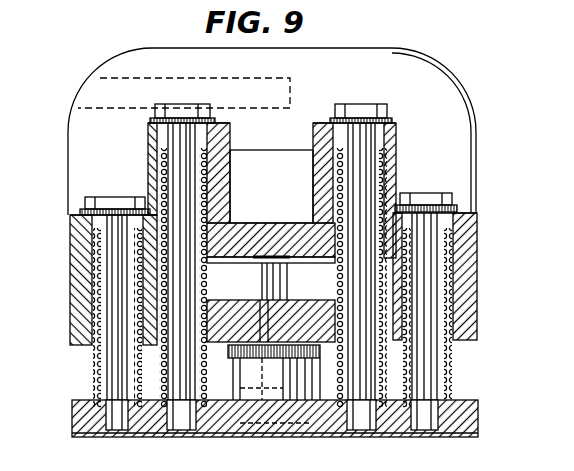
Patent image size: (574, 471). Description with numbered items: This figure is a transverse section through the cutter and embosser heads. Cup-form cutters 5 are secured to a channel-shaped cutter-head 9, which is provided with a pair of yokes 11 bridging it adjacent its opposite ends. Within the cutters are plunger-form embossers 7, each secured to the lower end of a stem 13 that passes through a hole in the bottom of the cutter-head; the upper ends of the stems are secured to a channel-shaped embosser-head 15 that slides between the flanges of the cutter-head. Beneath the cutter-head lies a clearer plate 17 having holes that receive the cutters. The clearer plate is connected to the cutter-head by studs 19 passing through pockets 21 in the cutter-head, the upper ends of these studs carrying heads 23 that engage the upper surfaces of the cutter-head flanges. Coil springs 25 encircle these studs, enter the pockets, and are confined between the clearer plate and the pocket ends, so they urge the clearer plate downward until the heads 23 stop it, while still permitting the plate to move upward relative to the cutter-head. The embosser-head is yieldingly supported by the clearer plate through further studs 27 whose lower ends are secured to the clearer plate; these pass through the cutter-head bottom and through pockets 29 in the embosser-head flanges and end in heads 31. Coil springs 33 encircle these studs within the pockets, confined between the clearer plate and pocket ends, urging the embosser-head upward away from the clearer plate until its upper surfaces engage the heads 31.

The cutter 5 is at (232, 395).
The embosser 7 is at (262, 420).
The cutter-head 9 is at (463, 307).
The yoke 11 is at (459, 153).
The stem 13 is at (286, 282).
The embosser-head 15 is at (297, 206).
The clearer plate 17 is at (470, 413).
The stud 19 is at (112, 378).
The pocket 21 is at (95, 252).
The head 23 is at (95, 208).
The coil spring 25 is at (97, 312).
The stud 27 is at (175, 162).
The pocket 29 is at (345, 210).
The head 31 is at (207, 107).
The coil spring 33 is at (330, 157).